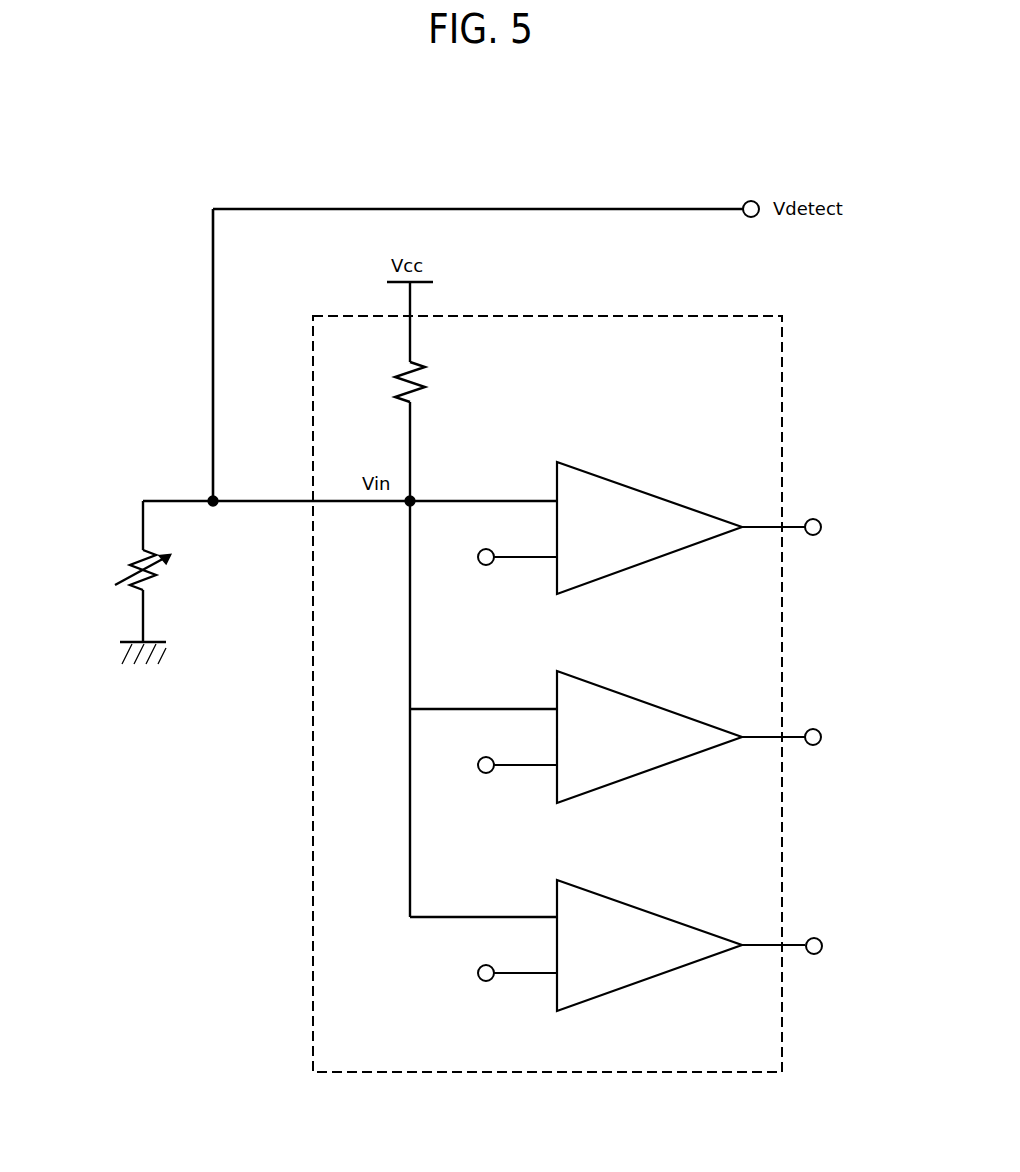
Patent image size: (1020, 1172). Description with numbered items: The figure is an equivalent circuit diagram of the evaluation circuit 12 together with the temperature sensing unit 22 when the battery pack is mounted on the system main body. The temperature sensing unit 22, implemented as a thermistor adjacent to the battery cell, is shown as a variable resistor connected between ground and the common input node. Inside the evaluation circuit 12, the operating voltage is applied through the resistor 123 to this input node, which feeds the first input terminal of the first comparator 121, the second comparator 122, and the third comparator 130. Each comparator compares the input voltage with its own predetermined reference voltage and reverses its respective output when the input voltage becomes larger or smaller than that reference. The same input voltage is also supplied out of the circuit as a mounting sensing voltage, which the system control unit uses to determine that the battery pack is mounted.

The evaluation circuit 12 is at (688, 316).
The temperature sensing unit 22 is at (131, 556).
The first comparator 121 is at (705, 512).
The second comparator 122 is at (705, 720).
The resistor 123 is at (400, 388).
The third comparator 130 is at (705, 930).